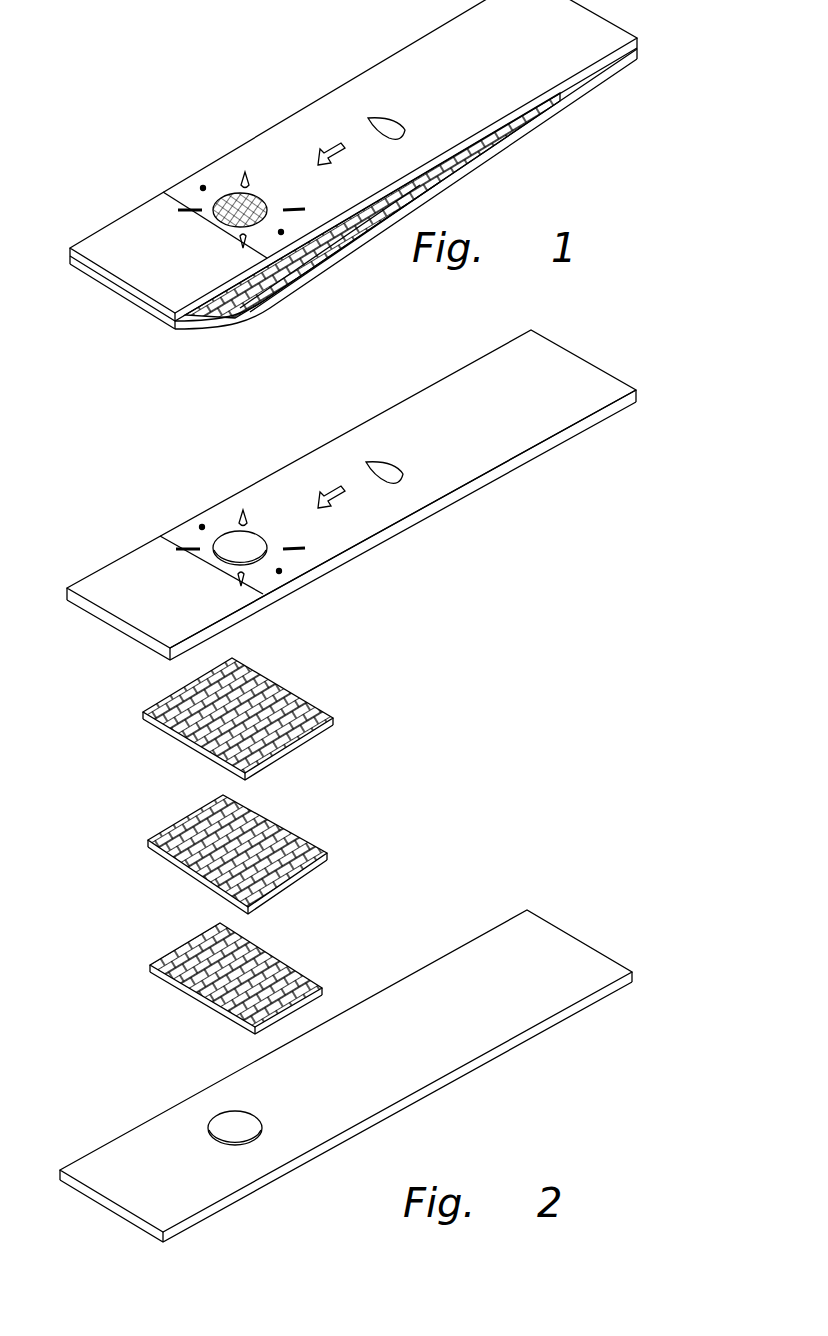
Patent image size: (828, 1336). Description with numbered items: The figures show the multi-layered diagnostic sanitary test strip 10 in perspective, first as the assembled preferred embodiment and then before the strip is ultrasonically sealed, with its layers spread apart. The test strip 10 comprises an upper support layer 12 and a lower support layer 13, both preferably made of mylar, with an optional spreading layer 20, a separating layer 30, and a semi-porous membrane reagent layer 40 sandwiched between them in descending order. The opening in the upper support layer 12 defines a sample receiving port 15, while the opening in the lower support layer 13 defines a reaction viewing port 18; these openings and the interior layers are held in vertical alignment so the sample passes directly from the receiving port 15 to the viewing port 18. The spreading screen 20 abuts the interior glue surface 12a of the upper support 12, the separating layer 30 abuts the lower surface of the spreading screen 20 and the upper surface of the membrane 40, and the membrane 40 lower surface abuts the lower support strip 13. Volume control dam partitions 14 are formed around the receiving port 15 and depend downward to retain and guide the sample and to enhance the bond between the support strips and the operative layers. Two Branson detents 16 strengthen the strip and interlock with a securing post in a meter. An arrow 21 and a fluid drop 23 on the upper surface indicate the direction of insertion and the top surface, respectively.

In FIG. 1, the test strip 10 is at (584, 105).
In FIG. 1, the upper support layer 12 is at (439, 133).
In FIG. 2, the upper support layer 12 is at (591, 378).
In FIG. 2, the interior glue surface 12a is at (345, 562).
In FIG. 1, the lower support layer 13 is at (147, 312).
In FIG. 2, the lower support layer 13 is at (533, 968).
In FIG. 1, the volume control dam partitions 14 is at (200, 210).
In FIG. 2, the volume control dam partitions 14 is at (197, 548).
In FIG. 1, the sample receiving port 15 is at (233, 223).
In FIG. 2, the sample receiving port 15 is at (233, 557).
In FIG. 1, the Branson detents 16 is at (204, 186).
In FIG. 2, the Branson detents 16 is at (203, 525).
In FIG. 2, the reaction viewing port 18 is at (233, 1128).
In FIG. 1, the spreading layer 20 is at (240, 315).
In FIG. 2, the spreading layer 20 is at (280, 682).
In FIG. 1, the arrow 21 is at (336, 146).
In FIG. 2, the arrow 21 is at (336, 488).
In FIG. 1, the fluid drop 23 is at (378, 117).
In FIG. 2, the fluid drop 23 is at (378, 462).
In FIG. 1, the separating layer 30 is at (290, 297).
In FIG. 2, the separating layer 30 is at (323, 845).
In FIG. 1, the semi-porous membrane reagent layer 40 is at (307, 268).
In FIG. 2, the semi-porous membrane reagent layer 40 is at (183, 942).